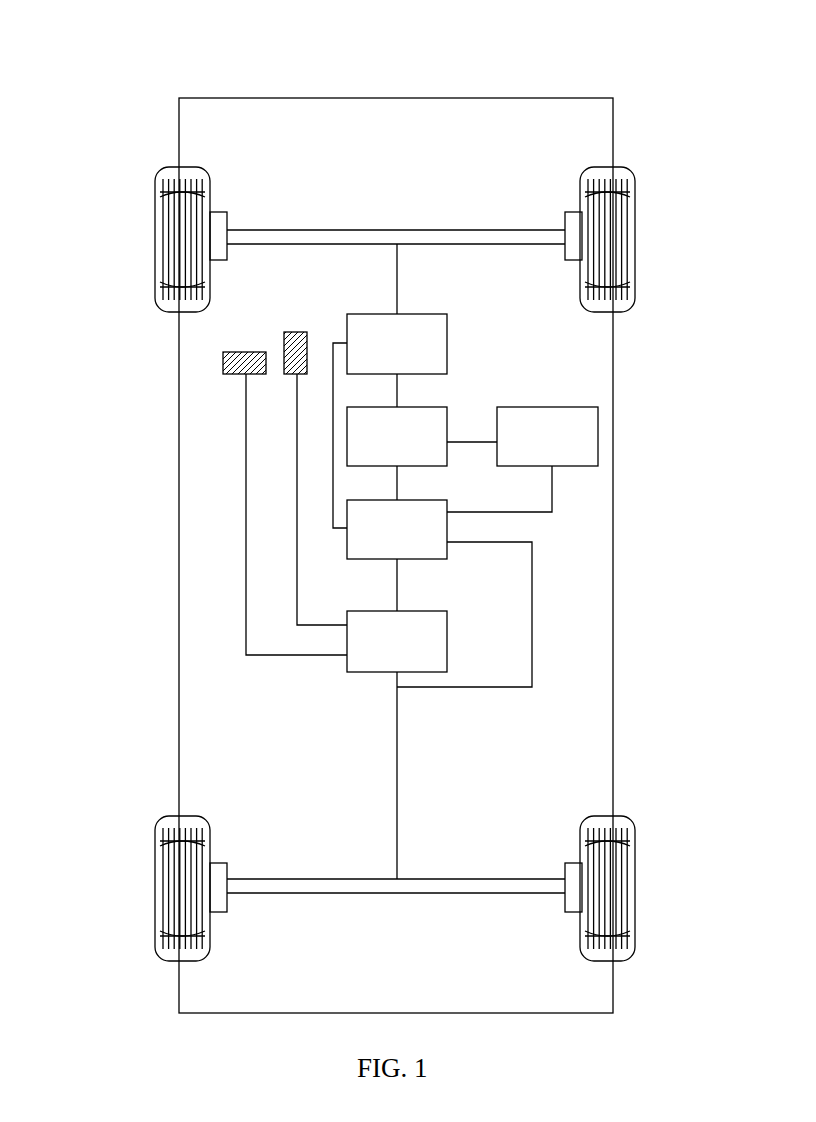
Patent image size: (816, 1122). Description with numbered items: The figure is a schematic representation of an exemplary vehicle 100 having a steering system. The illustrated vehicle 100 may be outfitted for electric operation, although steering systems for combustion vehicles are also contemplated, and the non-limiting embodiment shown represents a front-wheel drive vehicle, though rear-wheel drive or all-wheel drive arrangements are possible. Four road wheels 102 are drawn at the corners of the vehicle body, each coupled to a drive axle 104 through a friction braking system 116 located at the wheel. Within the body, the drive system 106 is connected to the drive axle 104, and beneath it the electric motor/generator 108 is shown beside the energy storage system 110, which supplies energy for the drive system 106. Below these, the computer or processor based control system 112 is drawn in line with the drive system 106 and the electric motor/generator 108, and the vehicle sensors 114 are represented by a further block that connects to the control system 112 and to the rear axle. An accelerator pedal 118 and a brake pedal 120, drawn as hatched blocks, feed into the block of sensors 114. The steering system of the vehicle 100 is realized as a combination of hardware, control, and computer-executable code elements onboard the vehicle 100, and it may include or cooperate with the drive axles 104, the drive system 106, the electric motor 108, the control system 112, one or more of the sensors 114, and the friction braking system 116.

The vehicle 100 is at (176, 78).
The road wheels 102 is at (155, 227).
The drive axle 104 is at (357, 229).
The drive system 106 is at (420, 313).
The electric motor/generator 108 is at (437, 406).
The energy storage system 110 is at (551, 406).
The control system 112 is at (447, 500).
The vehicle sensors 114 is at (447, 611).
The friction braking system 116 is at (228, 213).
The accelerator pedal 118 is at (295, 331).
The brake pedal 120 is at (240, 351).